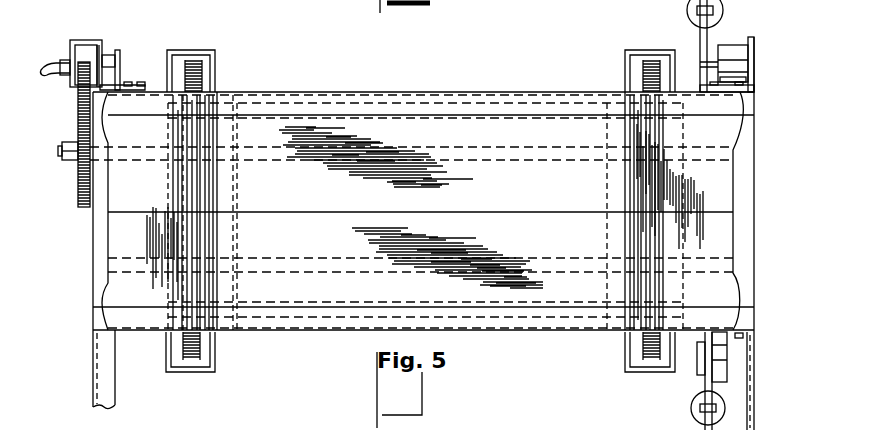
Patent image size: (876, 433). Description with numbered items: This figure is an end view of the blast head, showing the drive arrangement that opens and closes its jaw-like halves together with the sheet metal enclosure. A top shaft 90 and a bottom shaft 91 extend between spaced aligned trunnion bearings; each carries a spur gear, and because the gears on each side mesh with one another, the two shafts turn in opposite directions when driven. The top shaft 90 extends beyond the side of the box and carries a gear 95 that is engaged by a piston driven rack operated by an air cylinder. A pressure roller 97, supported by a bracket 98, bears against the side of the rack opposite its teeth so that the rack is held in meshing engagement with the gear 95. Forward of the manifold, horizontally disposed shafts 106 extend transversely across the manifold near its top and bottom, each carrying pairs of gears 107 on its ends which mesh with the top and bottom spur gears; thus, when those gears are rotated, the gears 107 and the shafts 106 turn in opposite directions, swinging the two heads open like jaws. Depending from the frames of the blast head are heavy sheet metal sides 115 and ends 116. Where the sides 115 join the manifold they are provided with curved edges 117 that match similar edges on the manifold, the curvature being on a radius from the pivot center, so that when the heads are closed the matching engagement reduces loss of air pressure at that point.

The top shaft 90 is at (160, 152).
The bottom shaft 91 is at (279, 261).
The gear 95 is at (79, 200).
The pressure roller 97 is at (93, 50).
The bracket 98 is at (117, 70).
The horizontally disposed shafts 106 is at (283, 98).
The gears 107 is at (200, 68).
The sheet metal sides 115 is at (122, 286).
The ends 116 is at (435, 190).
The curved edges 117 is at (742, 125).